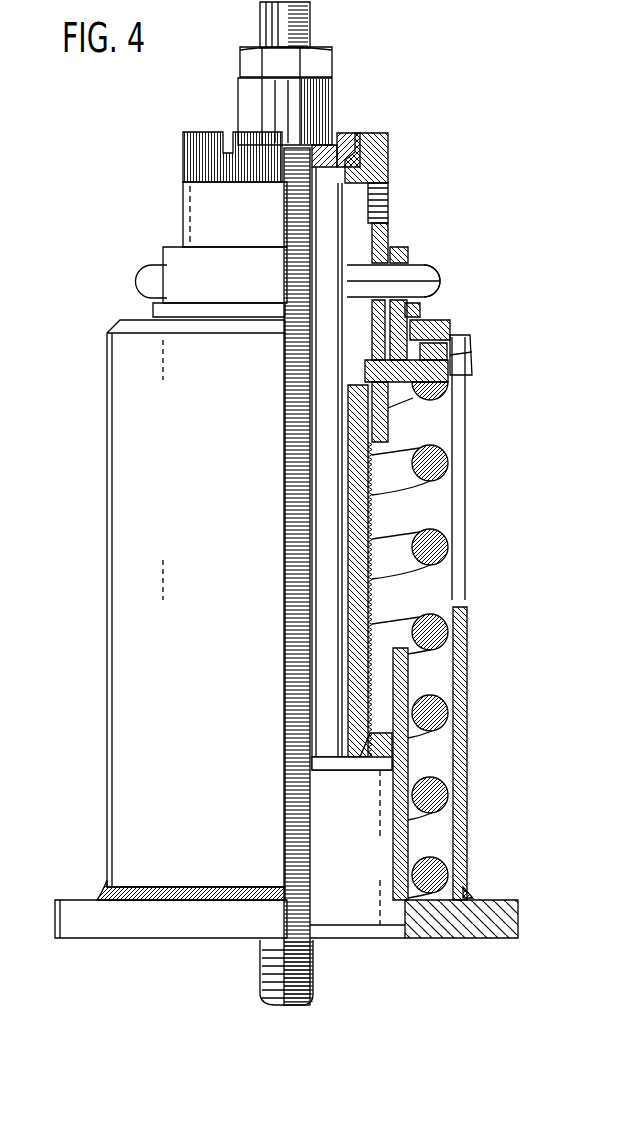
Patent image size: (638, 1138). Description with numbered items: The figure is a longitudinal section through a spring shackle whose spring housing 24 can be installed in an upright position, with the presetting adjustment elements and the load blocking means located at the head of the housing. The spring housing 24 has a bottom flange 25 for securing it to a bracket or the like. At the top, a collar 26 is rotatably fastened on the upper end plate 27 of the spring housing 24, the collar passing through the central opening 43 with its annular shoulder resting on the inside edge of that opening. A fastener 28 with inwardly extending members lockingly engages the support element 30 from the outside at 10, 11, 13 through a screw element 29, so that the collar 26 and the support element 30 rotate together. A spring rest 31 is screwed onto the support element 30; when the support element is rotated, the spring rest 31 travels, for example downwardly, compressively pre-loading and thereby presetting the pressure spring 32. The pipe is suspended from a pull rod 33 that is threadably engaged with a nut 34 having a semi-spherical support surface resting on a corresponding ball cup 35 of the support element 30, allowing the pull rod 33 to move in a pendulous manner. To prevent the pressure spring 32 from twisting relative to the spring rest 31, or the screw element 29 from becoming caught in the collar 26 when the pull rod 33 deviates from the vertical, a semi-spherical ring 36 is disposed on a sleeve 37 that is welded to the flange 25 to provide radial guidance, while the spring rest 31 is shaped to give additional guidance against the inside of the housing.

The locking engagement location 10 is at (395, 278).
The locking engagement location 11 is at (386, 212).
The locking engagement location 13 is at (360, 232).
The spring housing 24 is at (460, 793).
The bottom flange 25 is at (495, 915).
The collar 26 is at (410, 252).
The upper end plate 27 is at (452, 333).
The fastener 28 is at (430, 290).
The screw element 29 is at (388, 165).
The support element 30 is at (362, 512).
The spring rest 31 is at (462, 365).
The pressure spring 32 is at (446, 462).
The pull rod 33 is at (305, 593).
The nut 34 is at (290, 100).
The ball cup 35 is at (322, 143).
The semi-spherical ring 36 is at (392, 748).
The sleeve 37 is at (400, 668).
The central opening 43 is at (425, 318).